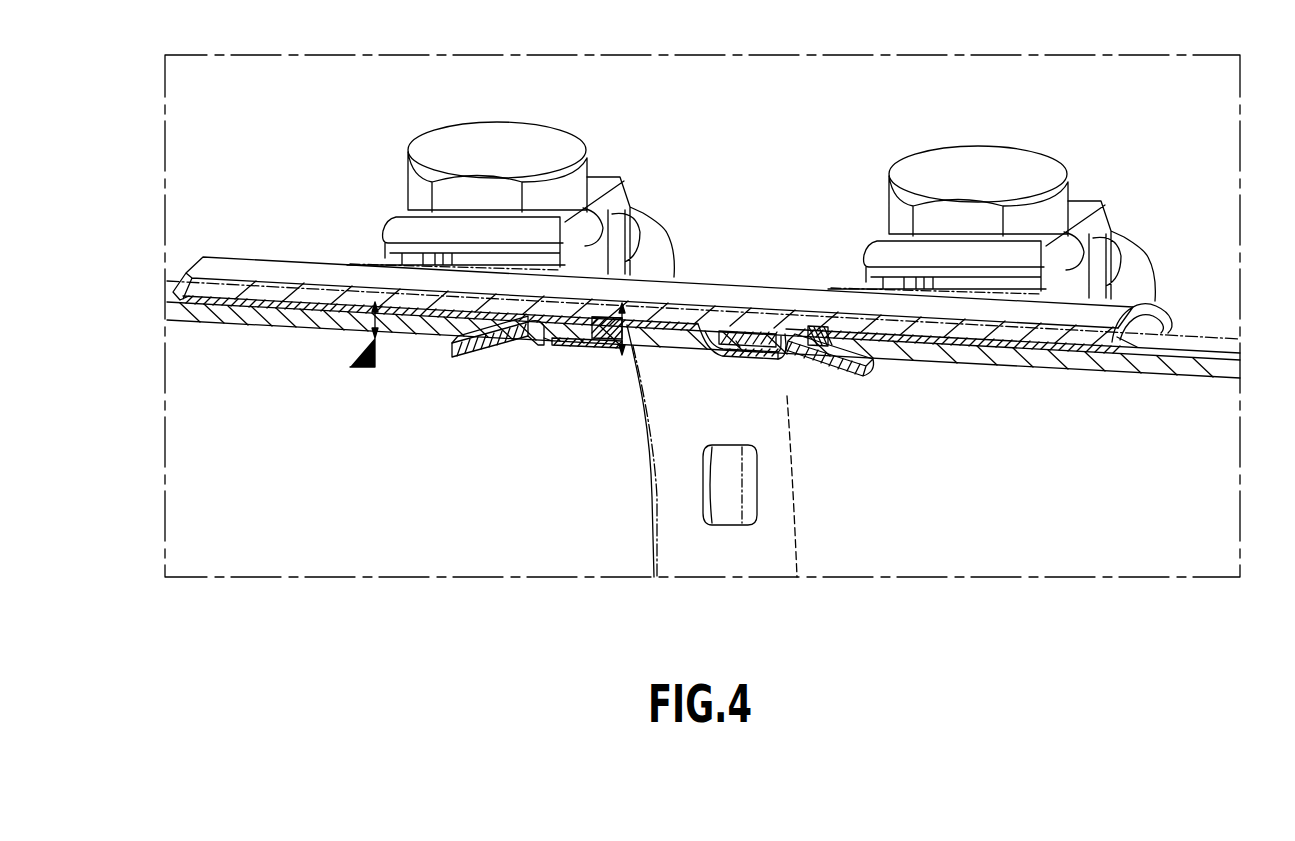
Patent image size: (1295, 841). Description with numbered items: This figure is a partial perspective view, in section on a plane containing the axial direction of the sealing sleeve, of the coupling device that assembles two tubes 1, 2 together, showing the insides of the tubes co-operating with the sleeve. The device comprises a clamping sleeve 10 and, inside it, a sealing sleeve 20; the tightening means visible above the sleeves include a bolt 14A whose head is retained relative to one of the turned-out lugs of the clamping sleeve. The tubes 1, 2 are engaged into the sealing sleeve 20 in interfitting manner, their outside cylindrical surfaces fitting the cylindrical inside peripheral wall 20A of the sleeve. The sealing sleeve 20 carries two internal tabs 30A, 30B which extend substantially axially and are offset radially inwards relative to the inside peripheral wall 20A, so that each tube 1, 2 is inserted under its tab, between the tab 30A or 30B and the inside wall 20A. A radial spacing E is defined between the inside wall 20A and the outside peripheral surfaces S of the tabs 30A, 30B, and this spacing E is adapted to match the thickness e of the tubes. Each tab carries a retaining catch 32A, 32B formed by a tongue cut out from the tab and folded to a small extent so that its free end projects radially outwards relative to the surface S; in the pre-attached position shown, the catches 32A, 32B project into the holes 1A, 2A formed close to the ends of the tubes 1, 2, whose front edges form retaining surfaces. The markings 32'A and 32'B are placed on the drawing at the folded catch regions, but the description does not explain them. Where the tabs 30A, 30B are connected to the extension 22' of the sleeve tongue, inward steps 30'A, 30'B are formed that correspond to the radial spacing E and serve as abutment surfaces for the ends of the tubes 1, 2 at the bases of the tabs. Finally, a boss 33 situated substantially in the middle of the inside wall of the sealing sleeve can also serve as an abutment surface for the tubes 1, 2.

The tube 1 is at (188, 500).
The tube 2 is at (1218, 500).
The clamping sleeve 10 is at (267, 267).
The hole 1A is at (447, 317).
The hole 2A is at (858, 340).
The bolt 14A is at (990, 158).
The sealing sleeve 20 is at (1150, 324).
The inside peripheral wall 20A is at (708, 421).
The extension 22' is at (727, 299).
The internal tab 30A is at (565, 331).
The inward step 30'A is at (564, 269).
The retaining catch 32A is at (487, 332).
The first bent lug 32'A is at (498, 356).
The internal tab 30B is at (758, 356).
The inward step 30'B is at (744, 293).
The retaining catch 32B is at (813, 342).
The second bent lug 32'B is at (785, 299).
The boss 33 is at (727, 510).
The outside peripheral surface S is at (736, 341).
The radial spacing E is at (633, 341).
The thickness e is at (364, 335).